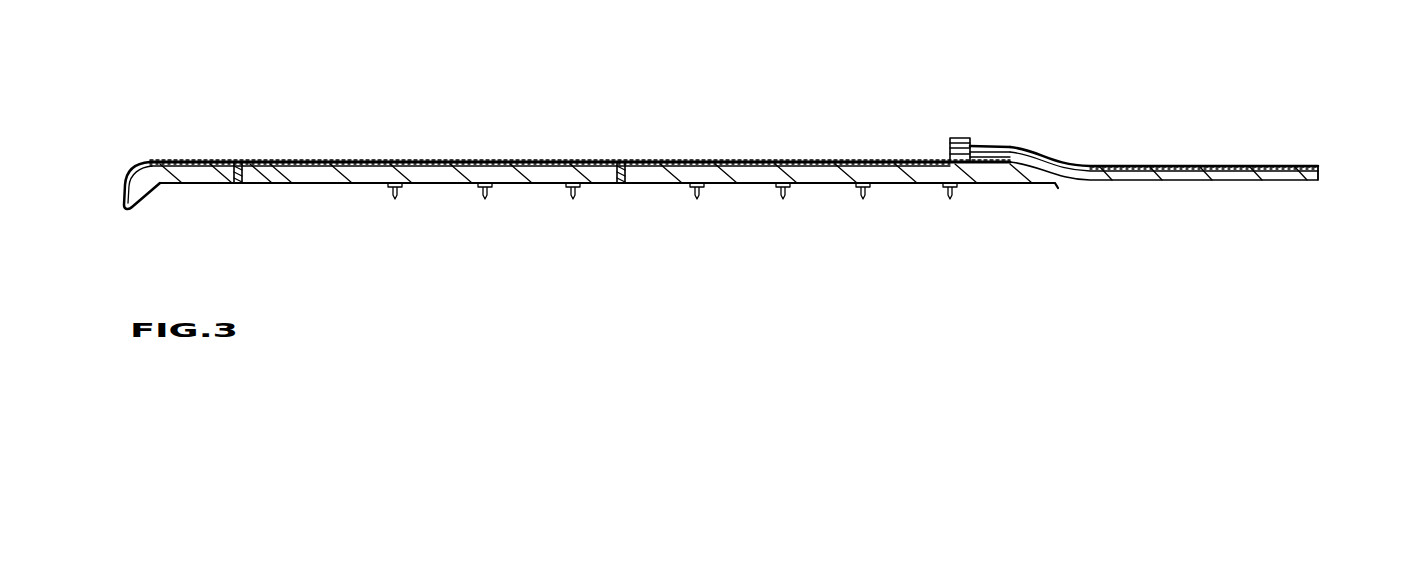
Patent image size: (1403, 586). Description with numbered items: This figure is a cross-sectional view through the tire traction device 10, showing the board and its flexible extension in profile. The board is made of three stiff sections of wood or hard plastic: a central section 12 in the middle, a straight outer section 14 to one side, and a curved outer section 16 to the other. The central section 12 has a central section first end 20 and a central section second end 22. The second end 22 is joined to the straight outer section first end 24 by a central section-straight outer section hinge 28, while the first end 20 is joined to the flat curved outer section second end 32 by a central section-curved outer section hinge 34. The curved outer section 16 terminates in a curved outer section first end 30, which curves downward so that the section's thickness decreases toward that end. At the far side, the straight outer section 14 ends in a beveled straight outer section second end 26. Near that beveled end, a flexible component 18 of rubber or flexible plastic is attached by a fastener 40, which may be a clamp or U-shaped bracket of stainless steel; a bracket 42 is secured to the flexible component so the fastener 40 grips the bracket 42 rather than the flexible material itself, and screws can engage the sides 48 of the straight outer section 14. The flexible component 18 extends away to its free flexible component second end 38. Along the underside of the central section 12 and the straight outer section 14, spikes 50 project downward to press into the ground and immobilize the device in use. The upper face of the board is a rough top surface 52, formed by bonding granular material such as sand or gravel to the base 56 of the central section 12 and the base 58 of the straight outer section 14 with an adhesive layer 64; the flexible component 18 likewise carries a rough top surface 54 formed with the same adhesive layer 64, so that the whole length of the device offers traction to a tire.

The tire traction device 10 is at (490, 115).
The central section 12 is at (425, 162).
The straight outer section 14 is at (780, 162).
The curved outer section 16 is at (180, 183).
The flexible component 18 is at (1197, 166).
The central section first end 20 is at (258, 183).
The central section second end 22 is at (615, 183).
The straight outer section first end 24 is at (630, 183).
The straight outer section second end 26 is at (1040, 186).
The central section-straight outer section hinge 28 is at (620, 162).
The curved outer section first end 30 is at (125, 190).
The curved outer section second end 32 is at (236, 184).
The central section-curved outer section hinge 34 is at (238, 162).
The flexible component second end 38 is at (1322, 173).
The fastener 40 is at (955, 140).
The bracket 42 is at (950, 155).
The sides 48 is at (750, 183).
The spikes 50 is at (395, 188).
The top surface 52 is at (160, 162).
The rough top surface 54 is at (1108, 166).
The base 56 is at (520, 183).
The base 58 is at (885, 183).
The adhesive layer 64 is at (205, 162).